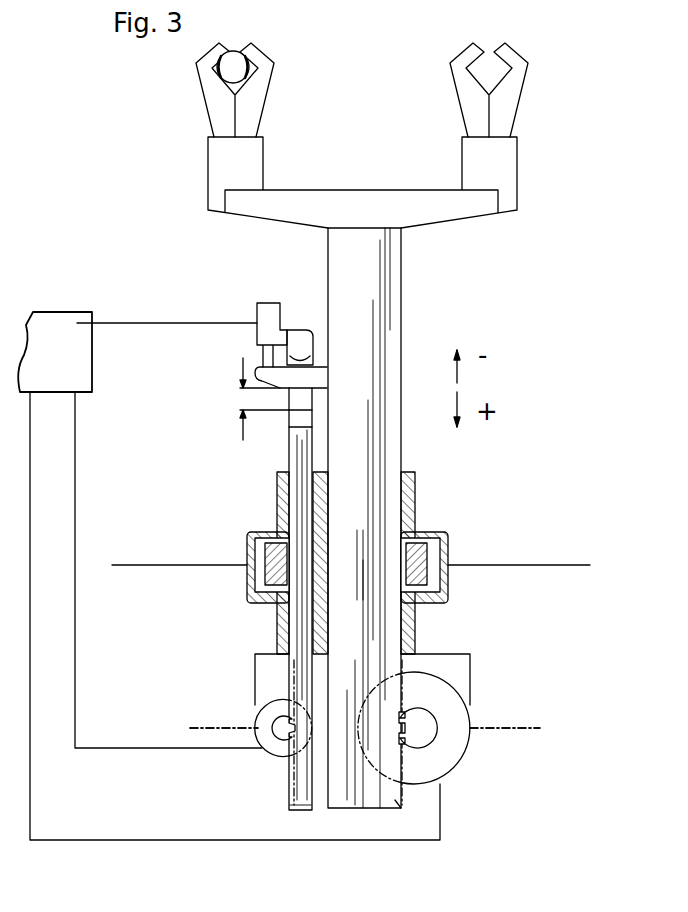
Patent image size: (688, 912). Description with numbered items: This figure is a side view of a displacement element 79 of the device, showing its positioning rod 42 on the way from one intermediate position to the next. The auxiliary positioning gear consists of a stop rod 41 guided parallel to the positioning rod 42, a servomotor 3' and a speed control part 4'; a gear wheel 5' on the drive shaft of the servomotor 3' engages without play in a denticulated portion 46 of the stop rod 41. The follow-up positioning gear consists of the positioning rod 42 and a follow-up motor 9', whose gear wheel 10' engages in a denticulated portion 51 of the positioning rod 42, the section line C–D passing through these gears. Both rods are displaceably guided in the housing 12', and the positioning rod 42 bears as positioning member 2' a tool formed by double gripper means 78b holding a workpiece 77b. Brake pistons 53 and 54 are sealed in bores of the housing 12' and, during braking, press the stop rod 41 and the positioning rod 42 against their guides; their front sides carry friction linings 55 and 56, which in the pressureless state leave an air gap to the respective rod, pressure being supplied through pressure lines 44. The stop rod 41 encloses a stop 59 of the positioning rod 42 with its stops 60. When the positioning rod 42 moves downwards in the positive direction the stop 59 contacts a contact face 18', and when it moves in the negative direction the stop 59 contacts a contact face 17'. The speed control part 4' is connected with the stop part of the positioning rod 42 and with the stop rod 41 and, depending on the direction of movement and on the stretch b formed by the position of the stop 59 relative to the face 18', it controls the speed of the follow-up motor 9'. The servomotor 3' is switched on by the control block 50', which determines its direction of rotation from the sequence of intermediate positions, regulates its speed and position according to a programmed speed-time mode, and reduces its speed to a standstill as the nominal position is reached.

The workpiece 77b is at (246, 68).
The double gripper means 78b is at (472, 117).
The positioning member 2' is at (362, 182).
The positioning rod 42 is at (392, 260).
The speed control part 4' is at (258, 321).
The contact face 17' is at (303, 325).
The stop 59 is at (258, 368).
The stops 60 is at (306, 420).
The contact face 18' is at (278, 431).
The stretch b is at (244, 399).
The control block 50' is at (55, 352).
The stop rod 41 is at (297, 458).
The housing 12' is at (374, 560).
The pressure lines 44 is at (578, 562).
The friction lining 55 is at (280, 548).
The brake piston 53 is at (266, 582).
The friction lining 56 is at (413, 545).
The displacement element 79 is at (363, 578).
The brake piston 54 is at (418, 578).
The servomotor 3' is at (267, 721).
The gear wheel 5' is at (267, 755).
The section line C-D C is at (214, 731).
The gear wheel 10' is at (462, 705).
The follow-up motor 9' is at (426, 734).
The section line C- D is at (519, 731).
The denticulated portion 46 is at (293, 795).
The denticulated portion 51 is at (405, 794).